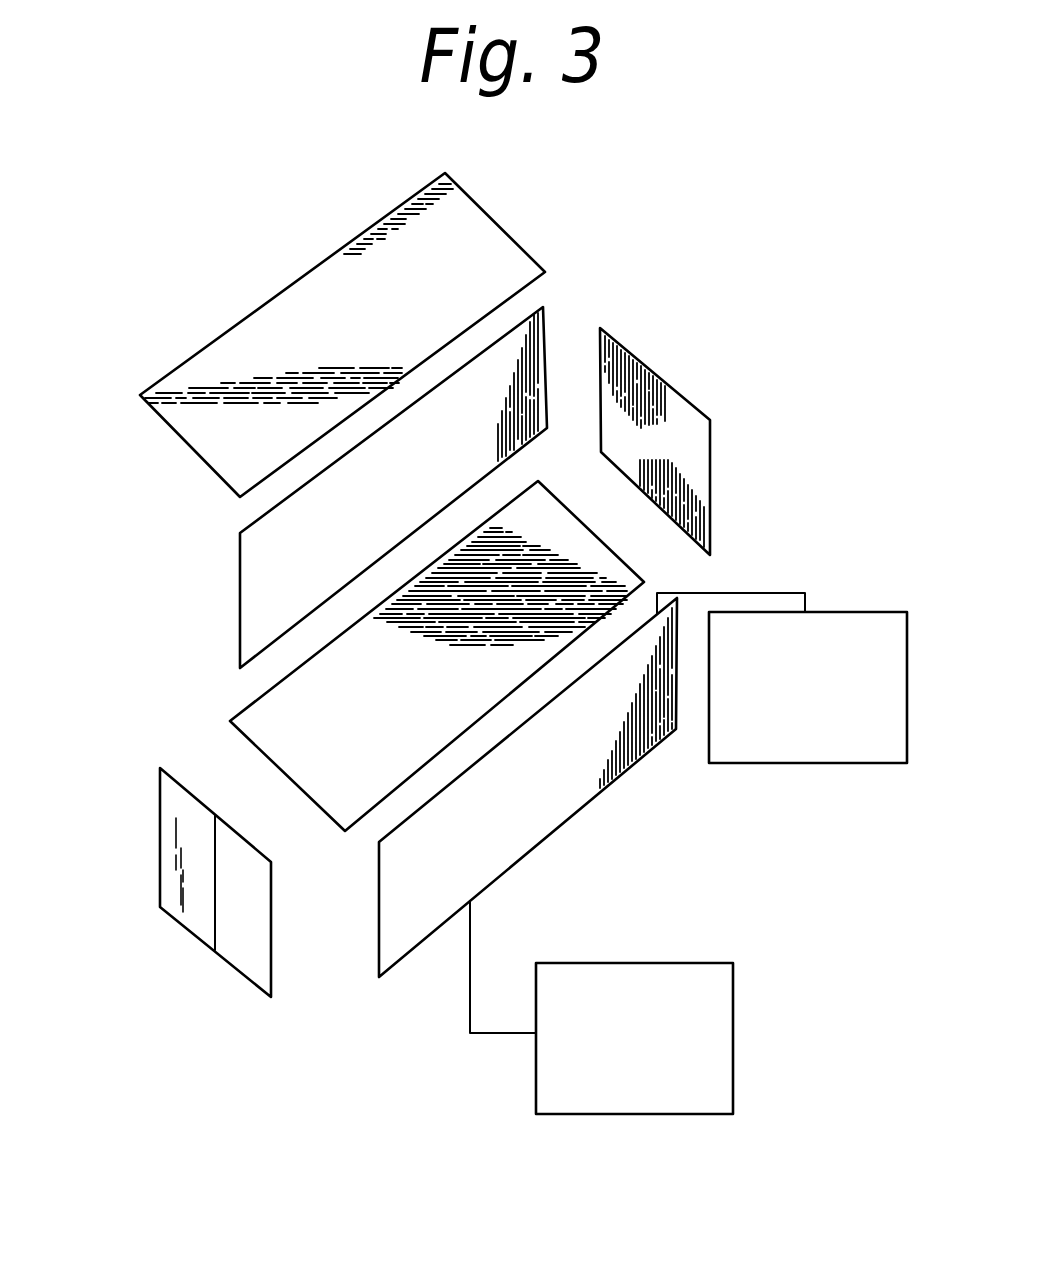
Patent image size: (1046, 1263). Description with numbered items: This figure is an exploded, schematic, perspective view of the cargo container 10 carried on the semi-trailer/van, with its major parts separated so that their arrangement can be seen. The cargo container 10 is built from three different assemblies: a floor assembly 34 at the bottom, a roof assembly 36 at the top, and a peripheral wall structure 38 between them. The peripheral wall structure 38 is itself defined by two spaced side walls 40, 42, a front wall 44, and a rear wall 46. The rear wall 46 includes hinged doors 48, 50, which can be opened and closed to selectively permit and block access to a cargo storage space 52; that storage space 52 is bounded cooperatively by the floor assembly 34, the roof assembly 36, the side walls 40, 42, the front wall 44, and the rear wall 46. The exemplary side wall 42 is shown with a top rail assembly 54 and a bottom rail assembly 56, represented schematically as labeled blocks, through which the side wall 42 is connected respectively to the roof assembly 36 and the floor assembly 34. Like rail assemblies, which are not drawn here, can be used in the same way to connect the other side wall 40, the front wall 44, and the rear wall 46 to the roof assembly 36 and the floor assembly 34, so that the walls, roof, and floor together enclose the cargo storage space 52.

The cargo container 10 is at (676, 353).
The floor assembly 34 is at (364, 710).
The roof assembly 36 is at (366, 333).
The peripheral wall structure 38 is at (750, 526).
The side wall 40 is at (357, 509).
The side wall 42 is at (513, 819).
The front wall 44 is at (645, 459).
The rear wall 46 is at (193, 832).
The hinged door 48 is at (185, 878).
The hinged door 50 is at (237, 932).
The cargo storage space 52 is at (524, 596).
The top rail assembly 54 is at (798, 737).
The bottom rail assembly 56 is at (625, 1091).